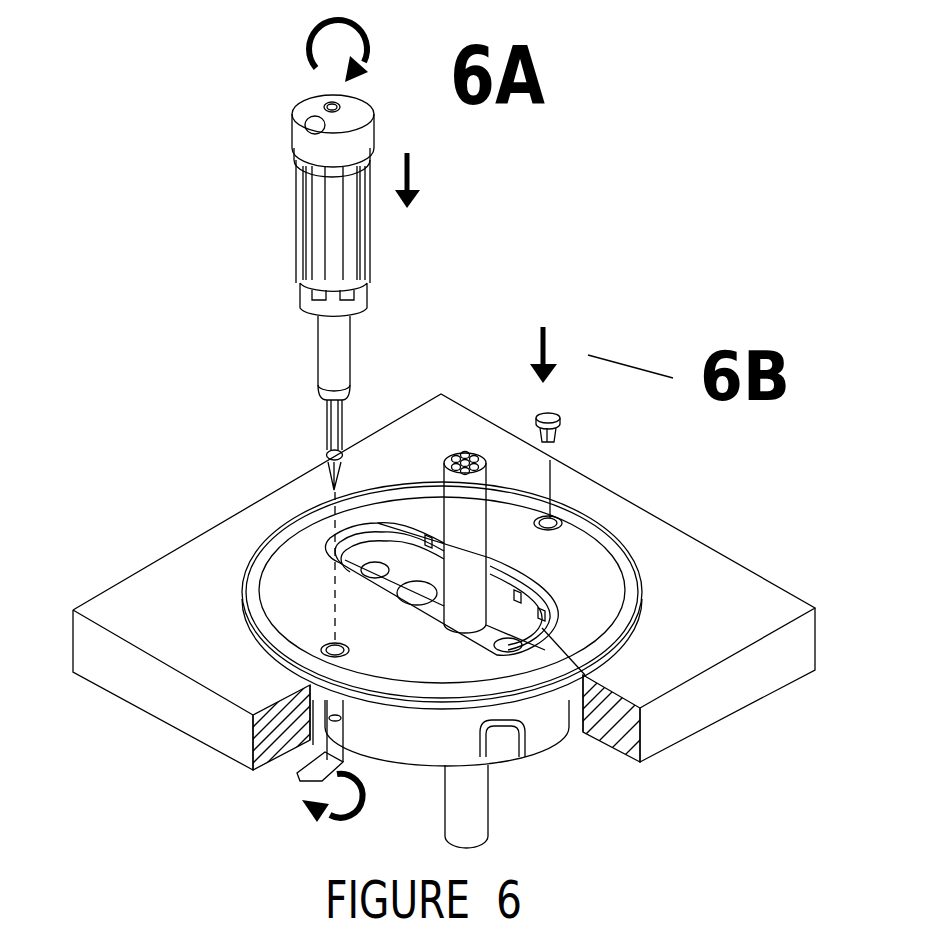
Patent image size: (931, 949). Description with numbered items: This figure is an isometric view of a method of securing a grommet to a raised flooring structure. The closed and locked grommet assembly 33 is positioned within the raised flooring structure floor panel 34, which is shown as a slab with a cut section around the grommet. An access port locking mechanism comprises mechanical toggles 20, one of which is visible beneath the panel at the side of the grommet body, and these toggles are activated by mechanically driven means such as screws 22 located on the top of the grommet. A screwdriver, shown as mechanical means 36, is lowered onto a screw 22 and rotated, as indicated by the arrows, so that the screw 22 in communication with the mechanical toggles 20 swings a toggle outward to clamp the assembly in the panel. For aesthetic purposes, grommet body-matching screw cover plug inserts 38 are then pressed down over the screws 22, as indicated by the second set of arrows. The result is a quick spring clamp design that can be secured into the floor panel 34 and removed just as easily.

The mechanical toggle 20 is at (298, 766).
The screw 22 is at (336, 656).
The grommet assembly 33 is at (312, 555).
The raised flooring structure floor panel 34 is at (157, 690).
The mechanical means (screwdriver) 36 is at (358, 122).
The screw cover plug insert 38 is at (560, 422).